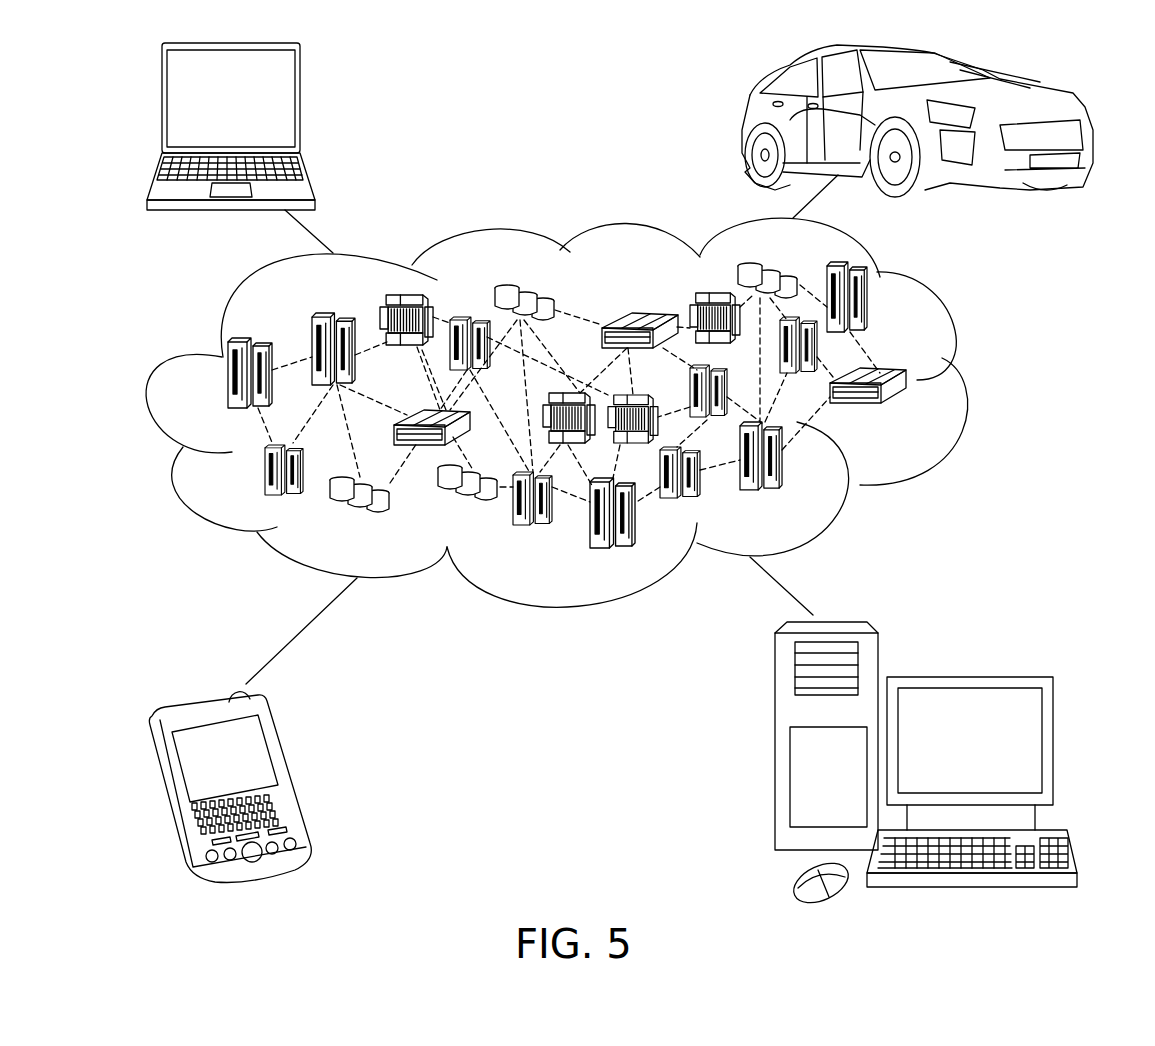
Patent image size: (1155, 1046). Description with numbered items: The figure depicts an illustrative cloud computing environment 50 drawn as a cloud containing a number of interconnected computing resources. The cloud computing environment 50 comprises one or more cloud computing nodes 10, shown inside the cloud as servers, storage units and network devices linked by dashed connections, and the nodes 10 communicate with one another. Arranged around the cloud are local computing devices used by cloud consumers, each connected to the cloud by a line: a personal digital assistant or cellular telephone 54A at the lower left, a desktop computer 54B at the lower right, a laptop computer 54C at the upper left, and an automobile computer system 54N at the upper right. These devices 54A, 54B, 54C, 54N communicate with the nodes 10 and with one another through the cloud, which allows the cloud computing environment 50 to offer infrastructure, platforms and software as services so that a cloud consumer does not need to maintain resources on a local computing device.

The cloud computing environment 50 is at (967, 382).
The cloud computing node 10 is at (906, 411).
The personal digital assistant (PDA) or cellular telephone 54A is at (287, 770).
The desktop computer 54B is at (967, 675).
The laptop computer 54C is at (300, 105).
The automobile computer system 54N is at (743, 122).